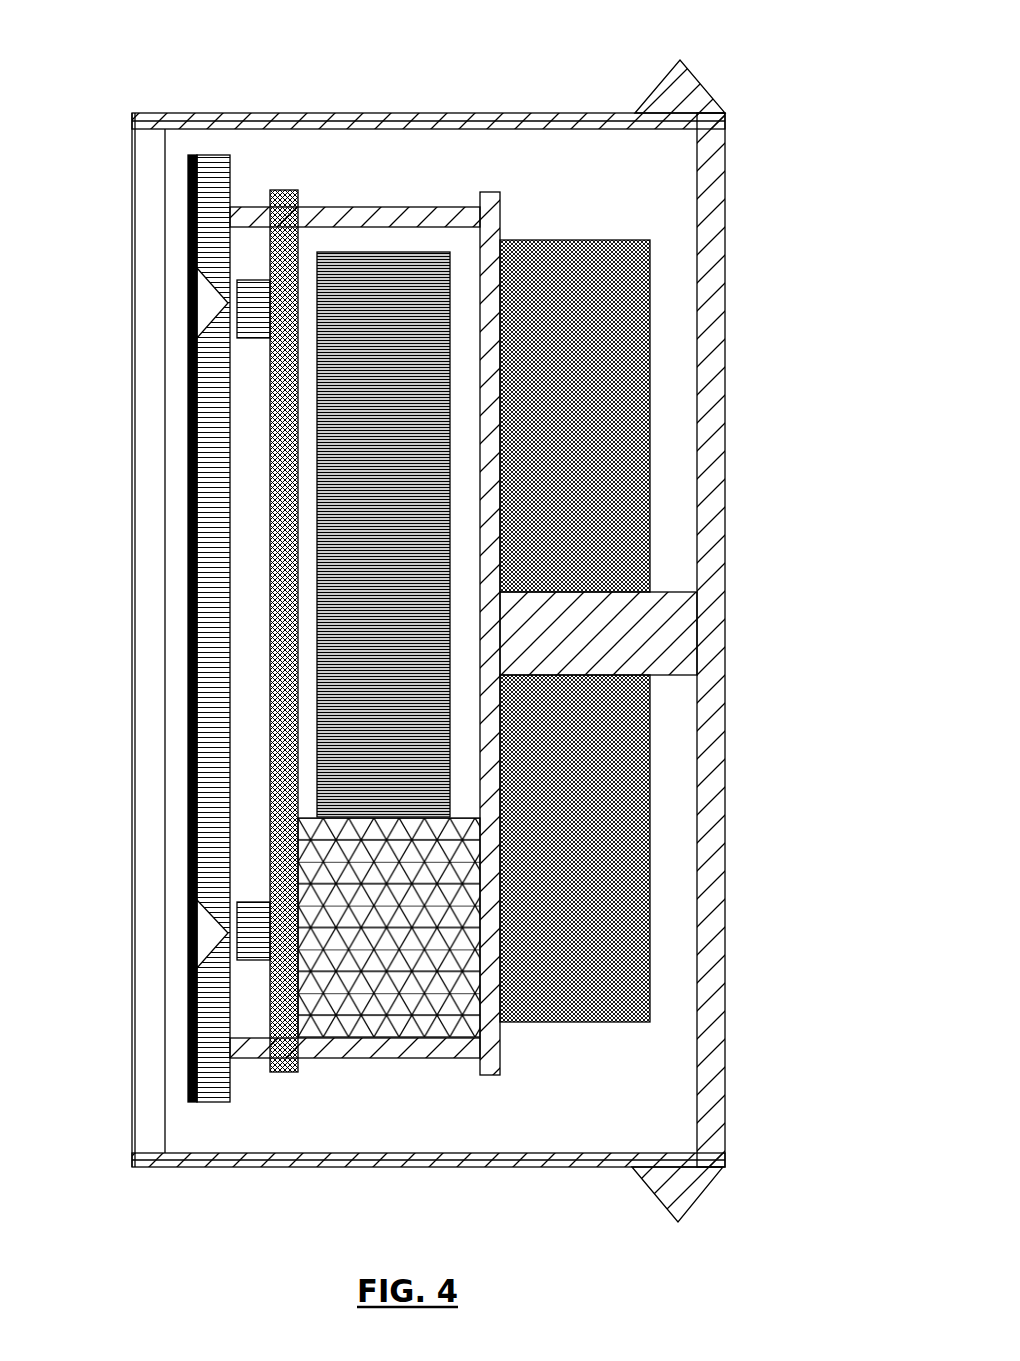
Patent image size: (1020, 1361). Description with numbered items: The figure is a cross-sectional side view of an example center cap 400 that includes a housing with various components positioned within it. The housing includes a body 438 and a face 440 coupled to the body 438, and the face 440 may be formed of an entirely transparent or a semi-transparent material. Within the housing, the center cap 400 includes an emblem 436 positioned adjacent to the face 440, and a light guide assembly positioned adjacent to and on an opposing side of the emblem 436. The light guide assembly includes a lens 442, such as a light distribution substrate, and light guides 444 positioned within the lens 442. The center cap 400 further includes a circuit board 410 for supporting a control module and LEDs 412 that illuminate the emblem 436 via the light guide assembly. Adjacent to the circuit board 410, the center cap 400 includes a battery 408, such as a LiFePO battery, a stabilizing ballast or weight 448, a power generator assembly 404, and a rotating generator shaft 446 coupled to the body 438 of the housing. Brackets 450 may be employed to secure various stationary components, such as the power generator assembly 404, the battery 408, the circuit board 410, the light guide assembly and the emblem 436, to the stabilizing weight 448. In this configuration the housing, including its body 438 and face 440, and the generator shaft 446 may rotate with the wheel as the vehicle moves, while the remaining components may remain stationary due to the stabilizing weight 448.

The center cap 400 is at (212, 37).
The power generator assembly 404 is at (615, 345).
The battery 408 is at (387, 252).
The circuit board 410 is at (270, 535).
The LEDs 412 is at (248, 313).
The emblem 436 is at (188, 218).
The body 438 is at (455, 113).
The face 440 is at (130, 368).
The lens 442 is at (217, 182).
The light guides 444 is at (208, 303).
The rotating generator shaft 446 is at (607, 653).
The stabilizing ballast/weight 448 is at (370, 1010).
The brackets 450 is at (347, 207).